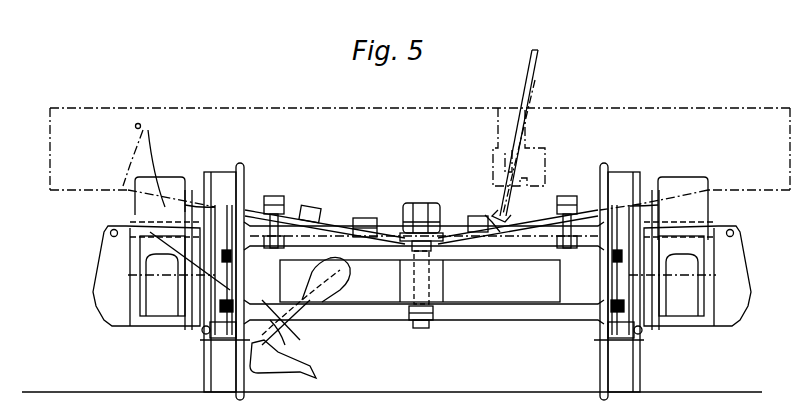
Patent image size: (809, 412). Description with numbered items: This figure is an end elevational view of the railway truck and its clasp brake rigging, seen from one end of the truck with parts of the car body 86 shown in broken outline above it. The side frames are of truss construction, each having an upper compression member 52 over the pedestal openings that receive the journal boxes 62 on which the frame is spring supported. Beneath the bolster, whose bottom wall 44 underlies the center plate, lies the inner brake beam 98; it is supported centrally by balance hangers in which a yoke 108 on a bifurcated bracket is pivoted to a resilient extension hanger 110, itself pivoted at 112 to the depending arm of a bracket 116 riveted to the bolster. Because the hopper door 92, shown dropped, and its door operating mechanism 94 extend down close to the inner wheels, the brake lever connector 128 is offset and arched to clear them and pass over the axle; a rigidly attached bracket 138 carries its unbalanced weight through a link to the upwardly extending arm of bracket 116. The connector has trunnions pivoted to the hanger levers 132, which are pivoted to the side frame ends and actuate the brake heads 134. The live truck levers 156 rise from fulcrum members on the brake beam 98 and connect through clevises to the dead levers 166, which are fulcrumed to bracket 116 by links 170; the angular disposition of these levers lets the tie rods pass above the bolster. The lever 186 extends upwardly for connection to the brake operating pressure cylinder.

The bottom wall 44 is at (424, 320).
The upper compression member 52 is at (166, 177).
The journal box 62 is at (422, 274).
The car body 86 is at (708, 108).
The hopper door 92 is at (312, 369).
The door operating mechanism 94 is at (348, 279).
The brake beam 98 is at (511, 320).
The yoke 108 is at (432, 320).
The resilient extension hanger 110 is at (434, 205).
The pivotal connection 112 is at (425, 203).
The bracket 116 is at (384, 226).
The brake lever connector 128 is at (515, 246).
The hanger lever 132 is at (228, 276).
The brake head 134 is at (210, 340).
The bracket 138 is at (416, 233).
The live truck lever 156 is at (268, 196).
The dead lever 166 is at (300, 214).
The link 170 is at (343, 207).
The lever 186 is at (537, 64).